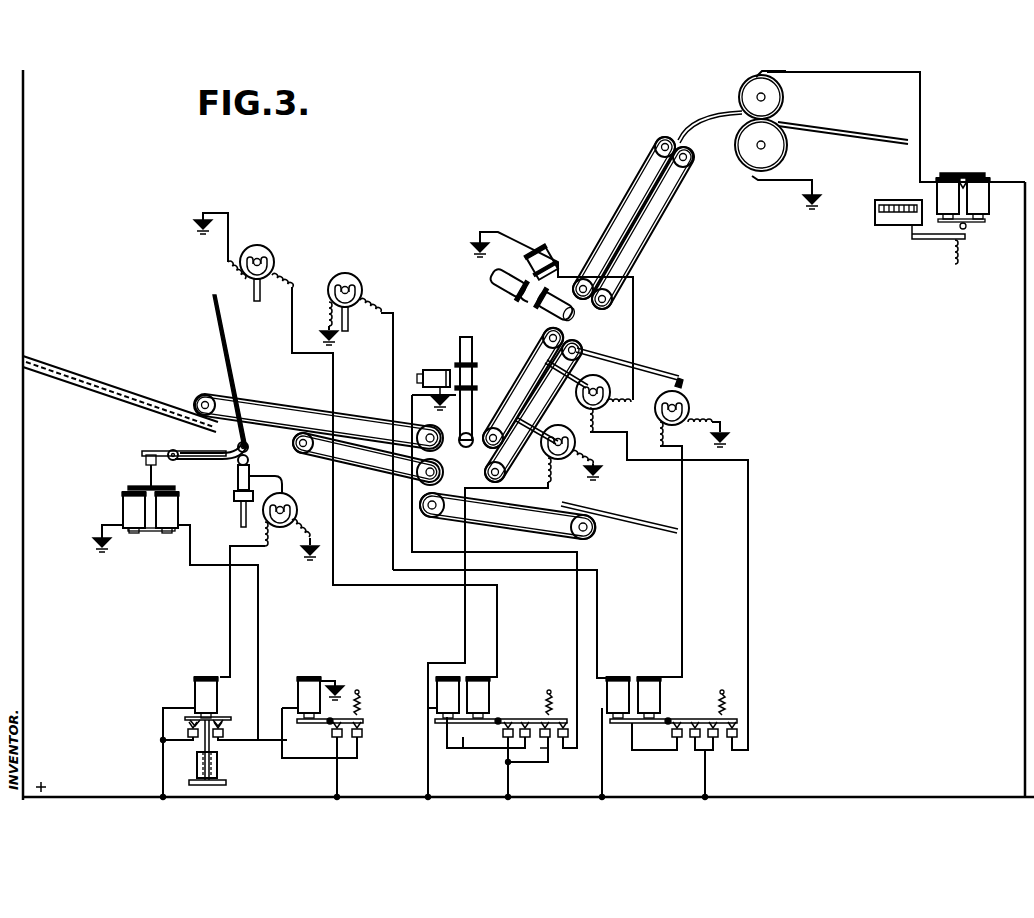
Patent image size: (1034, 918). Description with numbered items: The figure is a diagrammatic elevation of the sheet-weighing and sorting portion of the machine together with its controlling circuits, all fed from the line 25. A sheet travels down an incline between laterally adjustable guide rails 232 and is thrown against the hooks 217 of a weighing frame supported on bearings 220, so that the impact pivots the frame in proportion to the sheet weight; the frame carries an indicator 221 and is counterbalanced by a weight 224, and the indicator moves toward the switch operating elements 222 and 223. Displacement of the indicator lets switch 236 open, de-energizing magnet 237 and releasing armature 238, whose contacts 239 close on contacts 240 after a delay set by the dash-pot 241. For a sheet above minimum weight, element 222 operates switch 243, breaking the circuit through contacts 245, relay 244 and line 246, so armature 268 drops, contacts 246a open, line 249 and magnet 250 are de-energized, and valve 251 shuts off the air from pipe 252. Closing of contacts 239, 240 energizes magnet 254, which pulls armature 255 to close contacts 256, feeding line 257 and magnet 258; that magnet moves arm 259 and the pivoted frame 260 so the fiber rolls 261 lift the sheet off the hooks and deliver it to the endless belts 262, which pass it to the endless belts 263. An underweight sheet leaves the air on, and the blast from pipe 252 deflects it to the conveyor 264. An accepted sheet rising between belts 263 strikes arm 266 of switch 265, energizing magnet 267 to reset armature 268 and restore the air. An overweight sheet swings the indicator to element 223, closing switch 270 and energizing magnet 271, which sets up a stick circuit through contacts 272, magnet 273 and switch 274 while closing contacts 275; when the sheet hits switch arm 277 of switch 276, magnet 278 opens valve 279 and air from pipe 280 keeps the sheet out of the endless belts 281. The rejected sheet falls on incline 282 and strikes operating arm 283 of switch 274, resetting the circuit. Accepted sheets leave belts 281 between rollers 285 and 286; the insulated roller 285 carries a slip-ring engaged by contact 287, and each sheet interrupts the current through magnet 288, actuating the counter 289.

The line 25 is at (135, 800).
The hooks 217 is at (226, 446).
The bearings 220 is at (240, 467).
The indicator 221 is at (226, 362).
The switch operating element 222 is at (252, 297).
The switch operating element 223 is at (350, 331).
The weight 224 is at (236, 496).
The guide rails 232 is at (88, 380).
The switch 236 is at (298, 509).
The magnet 237 is at (194, 688).
The armature 238 is at (218, 717).
The contacts 239 is at (222, 724).
The contacts 240 is at (226, 744).
The dash-pot 241 is at (197, 756).
The switch 243 is at (271, 254).
The relay 244 is at (481, 685).
The contacts 245 is at (512, 718).
The line 246 is at (292, 343).
The contacts 246a is at (542, 751).
The line 249 is at (577, 603).
The magnet 250 is at (430, 370).
The valve 251 is at (470, 369).
The pipe 252 is at (476, 432).
The magnet 254 is at (306, 694).
The armature 255 is at (316, 724).
The contacts 256 is at (360, 735).
The line 257 is at (258, 601).
The magnet 258 is at (141, 531).
The arm 259 is at (138, 477).
The pivoted frame 260 is at (167, 454).
The fiber rolls 261 is at (249, 450).
The endless belts 262 is at (288, 448).
The endless belts 263 is at (484, 454).
The conveyor 264 is at (560, 517).
The switch 265 is at (540, 466).
The arm 266 is at (534, 421).
The magnet 267 is at (436, 700).
The armature 268 is at (444, 724).
The switch 270 is at (332, 287).
The magnet 271 is at (624, 677).
The contacts 272 is at (684, 744).
The magnet 273 is at (655, 695).
The switch 274 is at (691, 406).
The contacts 275 is at (716, 748).
The switch 276 is at (605, 388).
The switch arm 277 is at (560, 366).
The magnet 278 is at (538, 262).
The valve 279 is at (522, 298).
The pipe 280 is at (538, 336).
The endless belts 281 is at (617, 238).
The incline 282 is at (641, 363).
The operating arm 283 is at (684, 384).
The roller 285 is at (783, 100).
The roller 286 is at (783, 155).
The contact 287 is at (762, 72).
The magnet 288 is at (972, 210).
The counter 289 is at (888, 225).